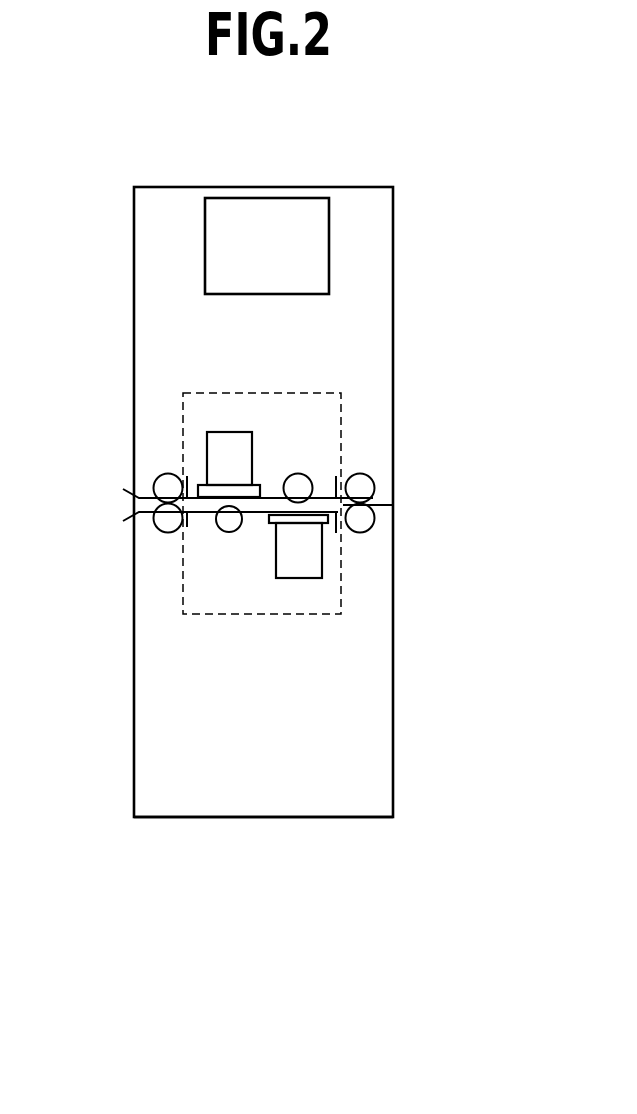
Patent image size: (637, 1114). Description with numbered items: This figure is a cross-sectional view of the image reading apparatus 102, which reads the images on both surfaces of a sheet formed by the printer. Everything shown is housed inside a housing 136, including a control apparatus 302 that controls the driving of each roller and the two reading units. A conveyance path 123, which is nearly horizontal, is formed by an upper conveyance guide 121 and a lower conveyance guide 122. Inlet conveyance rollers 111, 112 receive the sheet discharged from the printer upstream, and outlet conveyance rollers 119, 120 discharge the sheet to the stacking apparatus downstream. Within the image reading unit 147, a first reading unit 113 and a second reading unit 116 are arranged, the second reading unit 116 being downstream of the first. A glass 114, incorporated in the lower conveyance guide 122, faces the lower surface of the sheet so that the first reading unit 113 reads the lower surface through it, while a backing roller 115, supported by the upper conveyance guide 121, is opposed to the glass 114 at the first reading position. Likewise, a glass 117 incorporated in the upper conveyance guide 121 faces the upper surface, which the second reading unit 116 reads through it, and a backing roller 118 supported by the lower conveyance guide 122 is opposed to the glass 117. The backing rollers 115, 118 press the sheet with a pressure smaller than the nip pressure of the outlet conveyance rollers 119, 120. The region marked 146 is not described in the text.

The image reading apparatus 102 is at (257, 808).
The inlet conveyance roller 111 is at (373, 480).
The inlet conveyance roller 112 is at (362, 522).
The first reading unit 113 is at (308, 570).
The glass 114 is at (308, 525).
The backing roller 115 is at (298, 473).
The second reading unit 116 is at (220, 448).
The glass 117 is at (222, 487).
The backing roller 118 is at (228, 533).
The outlet conveyance roller 119 is at (163, 482).
The outlet conveyance roller 120 is at (165, 527).
The upper conveyance guide 121 is at (332, 477).
The lower conveyance guide 122 is at (198, 523).
The conveyance path 123 is at (380, 507).
The housing 136 is at (189, 187).
The internal space 146 is at (318, 417).
The image reading unit 147 is at (317, 617).
The control apparatus 302 is at (268, 208).